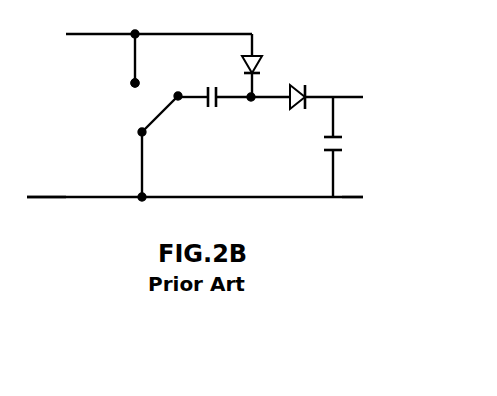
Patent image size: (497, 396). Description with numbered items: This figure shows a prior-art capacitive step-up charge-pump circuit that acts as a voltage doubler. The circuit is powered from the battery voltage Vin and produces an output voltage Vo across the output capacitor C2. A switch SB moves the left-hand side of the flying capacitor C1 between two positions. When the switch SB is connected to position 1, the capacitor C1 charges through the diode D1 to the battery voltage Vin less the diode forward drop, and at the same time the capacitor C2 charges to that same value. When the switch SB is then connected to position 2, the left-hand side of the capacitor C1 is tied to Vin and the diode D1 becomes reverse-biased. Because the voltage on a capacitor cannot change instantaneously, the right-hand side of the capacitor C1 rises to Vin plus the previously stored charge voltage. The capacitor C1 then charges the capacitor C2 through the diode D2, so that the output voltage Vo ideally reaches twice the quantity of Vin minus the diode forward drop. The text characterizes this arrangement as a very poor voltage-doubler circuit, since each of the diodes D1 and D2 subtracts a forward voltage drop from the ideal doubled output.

The position 1 is at (128, 139).
The position 2 is at (124, 91).
The switch SB is at (162, 125).
The capacitor C1 is at (234, 116).
The capacitor C2 is at (357, 147).
The diode D1 is at (235, 65).
The diode D2 is at (300, 86).
The battery voltage Vin is at (44, 127).
The output voltage Vo is at (383, 159).